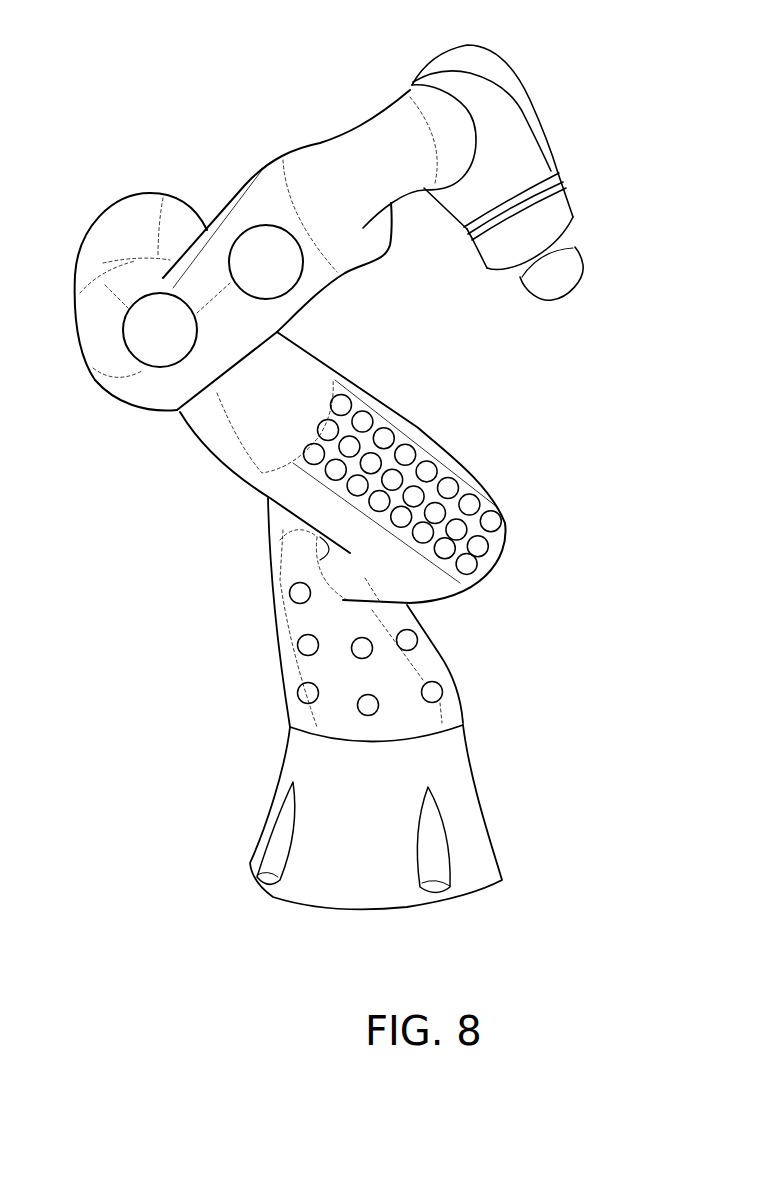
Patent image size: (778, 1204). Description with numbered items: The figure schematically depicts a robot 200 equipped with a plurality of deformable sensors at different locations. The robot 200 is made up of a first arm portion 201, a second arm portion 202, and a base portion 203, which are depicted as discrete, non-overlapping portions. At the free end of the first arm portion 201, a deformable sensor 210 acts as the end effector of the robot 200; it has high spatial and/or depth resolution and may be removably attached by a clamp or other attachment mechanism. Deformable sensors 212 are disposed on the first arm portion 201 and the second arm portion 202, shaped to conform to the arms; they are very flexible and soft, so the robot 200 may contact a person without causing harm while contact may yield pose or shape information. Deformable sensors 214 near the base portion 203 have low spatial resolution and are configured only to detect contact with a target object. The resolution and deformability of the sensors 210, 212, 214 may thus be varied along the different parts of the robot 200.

The robot 200 is at (120, 120).
The first arm portion 201 is at (355, 128).
The second arm portion 202 is at (220, 467).
The base portion 203 is at (277, 630).
The deformable sensor 210 is at (583, 260).
The deformable sensors 212 is at (246, 226).
The deformable sensors 214 is at (398, 432).